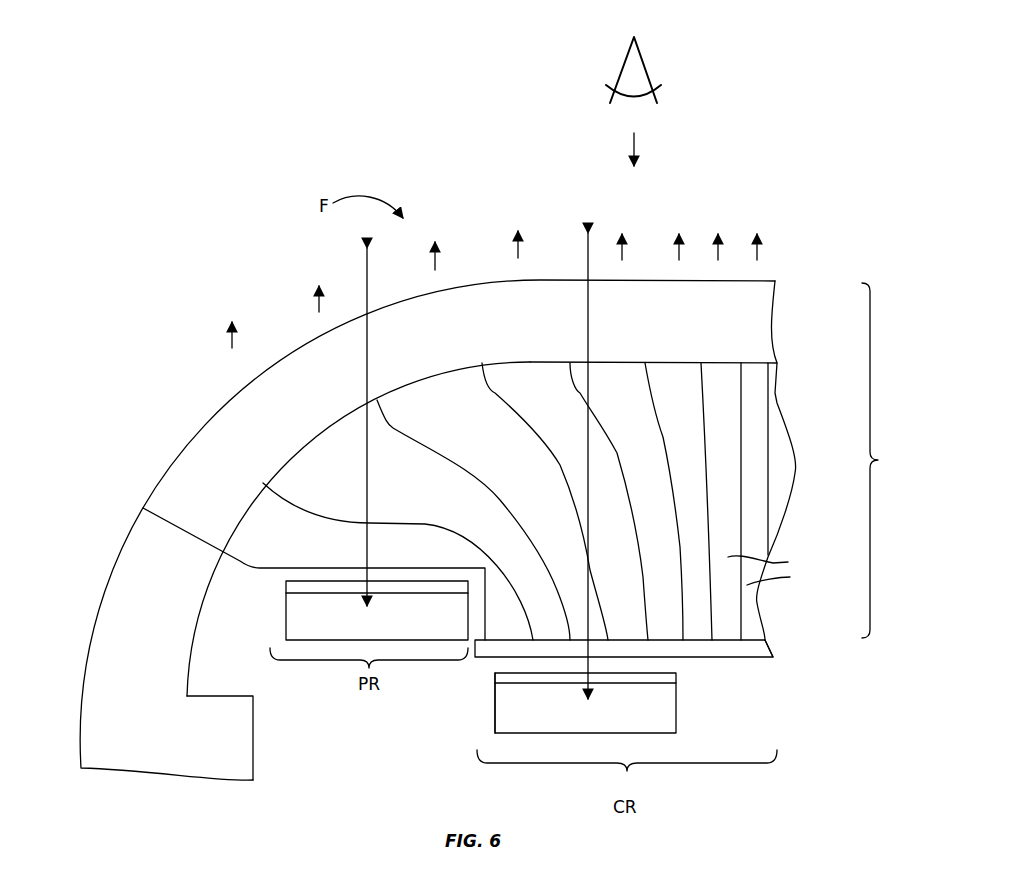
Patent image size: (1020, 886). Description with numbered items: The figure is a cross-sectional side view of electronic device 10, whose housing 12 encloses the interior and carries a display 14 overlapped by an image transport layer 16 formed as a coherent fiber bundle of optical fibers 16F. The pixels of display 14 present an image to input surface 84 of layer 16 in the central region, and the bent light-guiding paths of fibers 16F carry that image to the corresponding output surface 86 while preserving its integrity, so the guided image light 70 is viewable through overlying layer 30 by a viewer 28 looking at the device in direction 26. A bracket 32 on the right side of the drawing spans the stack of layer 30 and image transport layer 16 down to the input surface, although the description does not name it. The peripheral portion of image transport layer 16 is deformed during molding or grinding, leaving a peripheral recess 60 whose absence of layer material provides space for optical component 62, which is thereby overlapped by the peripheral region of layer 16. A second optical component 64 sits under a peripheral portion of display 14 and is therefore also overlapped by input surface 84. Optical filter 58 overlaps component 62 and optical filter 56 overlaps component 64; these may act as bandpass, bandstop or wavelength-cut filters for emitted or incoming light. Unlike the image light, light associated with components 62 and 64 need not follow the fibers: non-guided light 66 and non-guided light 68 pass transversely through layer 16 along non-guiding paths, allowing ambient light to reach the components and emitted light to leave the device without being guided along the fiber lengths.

The electronic device 10 is at (850, 198).
The housing 12 is at (115, 711).
The display 14 is at (758, 648).
The image transport layer 16 is at (793, 440).
The optical fibers 16F is at (777, 568).
The direction 26 is at (634, 148).
The viewer 28 is at (639, 53).
The layer 30 is at (768, 338).
The stack 32 is at (886, 460).
The optical filter 56 is at (495, 683).
The optical filter 58 is at (287, 590).
The recess 60 is at (256, 600).
The optical component 62 is at (293, 622).
The optical component 64 is at (676, 712).
The non-guided light 66 is at (368, 348).
The non-guided light 68 is at (588, 318).
The image light 70 is at (229, 332).
The input surface 84 is at (727, 643).
The output surface 86 is at (258, 497).